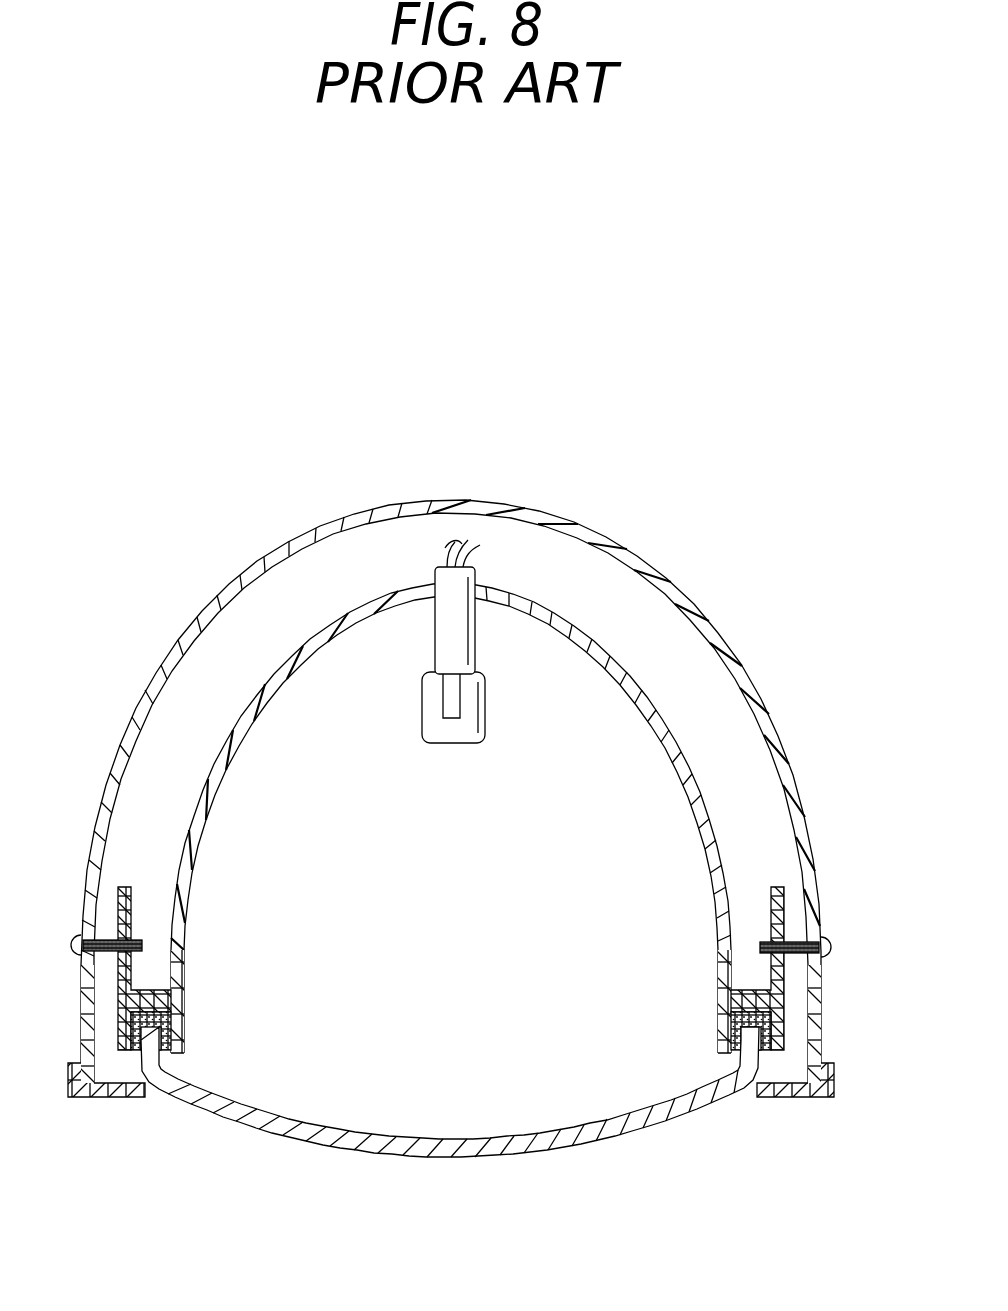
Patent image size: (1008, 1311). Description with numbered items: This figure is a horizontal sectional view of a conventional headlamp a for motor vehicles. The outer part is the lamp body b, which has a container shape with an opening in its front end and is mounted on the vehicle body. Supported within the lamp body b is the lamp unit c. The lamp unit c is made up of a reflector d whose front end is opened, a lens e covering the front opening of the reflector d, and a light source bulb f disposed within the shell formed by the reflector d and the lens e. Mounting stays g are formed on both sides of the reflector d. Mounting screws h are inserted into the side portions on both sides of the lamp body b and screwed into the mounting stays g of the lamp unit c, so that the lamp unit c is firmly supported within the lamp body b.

The headlamp a is at (377, 440).
The lamp body b is at (223, 590).
The lamp unit c is at (450, 1152).
The reflector d is at (466, 797).
The lens e is at (354, 1153).
The light source bulb f is at (450, 745).
The mounting stays g is at (130, 897).
The mounting screws h is at (102, 935).